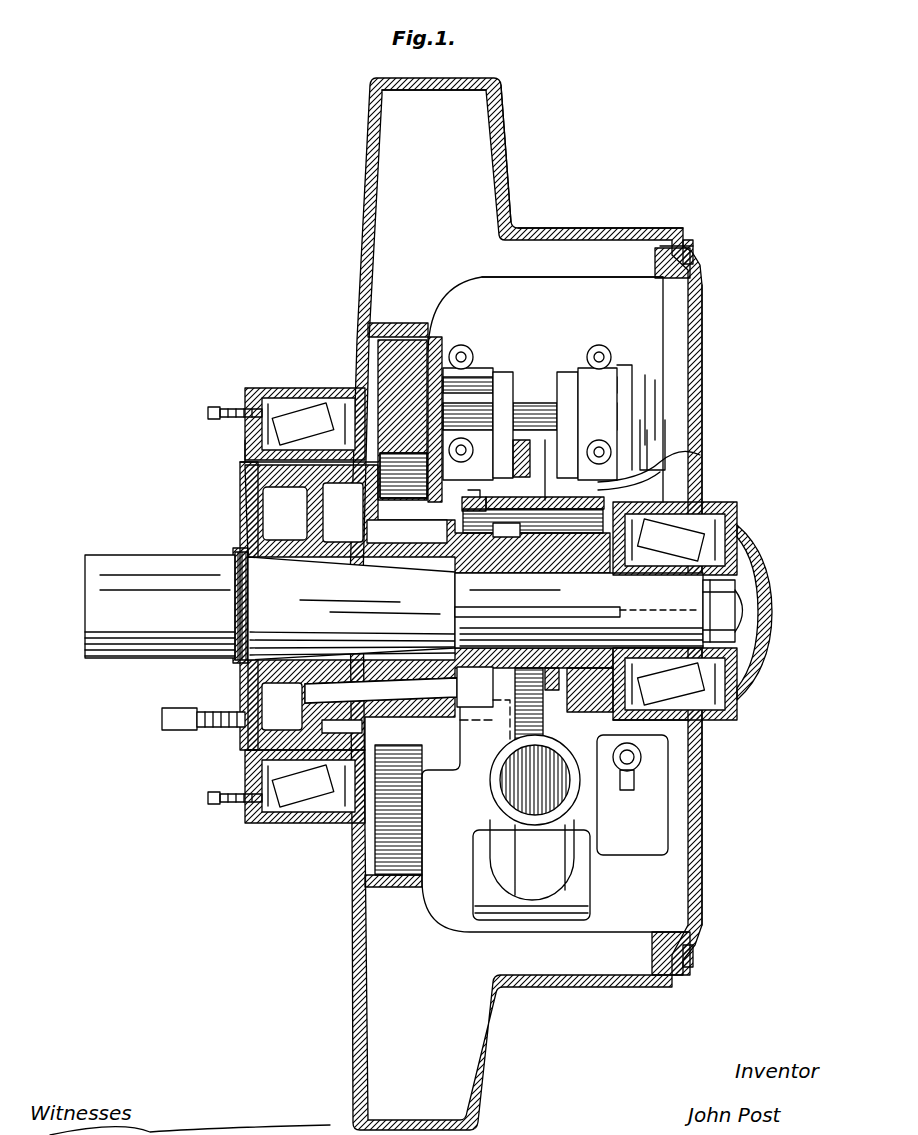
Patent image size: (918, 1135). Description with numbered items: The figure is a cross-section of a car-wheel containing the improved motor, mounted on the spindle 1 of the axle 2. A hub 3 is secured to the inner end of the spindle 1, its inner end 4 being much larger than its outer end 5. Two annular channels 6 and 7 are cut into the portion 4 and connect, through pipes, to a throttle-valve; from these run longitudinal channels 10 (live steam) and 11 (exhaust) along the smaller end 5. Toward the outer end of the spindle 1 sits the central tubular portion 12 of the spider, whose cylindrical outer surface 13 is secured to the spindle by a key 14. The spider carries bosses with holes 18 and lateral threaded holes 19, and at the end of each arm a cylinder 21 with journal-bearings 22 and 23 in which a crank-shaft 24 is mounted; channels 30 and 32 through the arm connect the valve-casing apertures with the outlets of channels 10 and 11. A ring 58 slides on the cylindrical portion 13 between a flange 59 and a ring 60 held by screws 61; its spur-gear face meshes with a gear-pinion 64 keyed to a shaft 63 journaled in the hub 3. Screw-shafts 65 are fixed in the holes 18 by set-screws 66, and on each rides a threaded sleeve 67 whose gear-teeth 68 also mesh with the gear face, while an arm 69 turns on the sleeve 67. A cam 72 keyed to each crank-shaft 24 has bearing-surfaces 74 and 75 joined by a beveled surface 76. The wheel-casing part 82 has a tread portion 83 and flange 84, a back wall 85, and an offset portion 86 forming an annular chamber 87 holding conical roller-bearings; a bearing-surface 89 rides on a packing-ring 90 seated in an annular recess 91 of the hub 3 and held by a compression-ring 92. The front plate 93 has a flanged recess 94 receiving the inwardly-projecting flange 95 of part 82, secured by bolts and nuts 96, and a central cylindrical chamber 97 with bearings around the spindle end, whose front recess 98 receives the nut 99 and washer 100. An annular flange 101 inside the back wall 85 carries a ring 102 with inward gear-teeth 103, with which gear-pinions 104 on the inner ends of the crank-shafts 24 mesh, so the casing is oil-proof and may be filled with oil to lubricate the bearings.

The spindle 1 is at (262, 575).
The axle 2 is at (110, 605).
The hub 3 is at (240, 678).
The inner end of hub 4 is at (285, 513).
The outer end of hub 5 is at (407, 533).
The annular channel 6 is at (381, 593).
The annular channel 7 is at (262, 505).
The longitudinal channel 10 is at (427, 528).
The longitudinal channel 11 is at (381, 689).
The central tubular portion 12 is at (570, 632).
The cylindrical surface 13 is at (560, 665).
The key 14 is at (480, 612).
The holes 18 is at (462, 502).
The threaded holes 19 is at (487, 503).
The cylinder 21 is at (495, 820).
The journal-bearing 22 is at (580, 368).
The journal-bearing 23 is at (480, 368).
The crank-shaft 24 is at (385, 385).
The channel 30 is at (470, 498).
The channel 32 is at (475, 687).
The ring 58 is at (525, 570).
The flange 59 is at (498, 718).
The ring 60 is at (548, 565).
The screws 61 is at (555, 685).
The shaft 63 is at (175, 722).
The gear-pinion 64 is at (535, 760).
The screw-shaft 65 is at (525, 480).
The set-screw 66 is at (508, 440).
The threaded sleeve 67 is at (545, 497).
The gear-teeth 68 is at (548, 485).
The arm 69 is at (700, 475).
The cam 72 is at (645, 385).
The bearing-surface 74 is at (608, 360).
The bearing-surface 75 is at (648, 370).
The beveled surface 76 is at (625, 385).
The wheel-casing part 82 is at (434, 152).
The tread portion 83 is at (594, 228).
The flange 84 is at (505, 145).
The back wall 85 is at (363, 205).
The offset portion 86 is at (290, 393).
The annular chamber 87 is at (262, 385).
The bearing-surface 89 is at (248, 452).
The packing-ring 90 is at (248, 475).
The annular recess 91 is at (245, 490).
The compression-ring 92 is at (242, 740).
The front plate 93 is at (705, 415).
The flanged recess 94 is at (690, 275).
The inwardly-projecting flange 95 is at (660, 273).
The bolts and nuts 96 is at (690, 255).
The cylindrical chamber 97 is at (720, 498).
The recess 98 is at (765, 612).
The nut 99 is at (740, 590).
The washer 100 is at (752, 640).
The annular flange 101 is at (410, 318).
The ring 102 is at (437, 333).
The gear-teeth 103 is at (382, 350).
The gear-pinions 104 is at (490, 390).